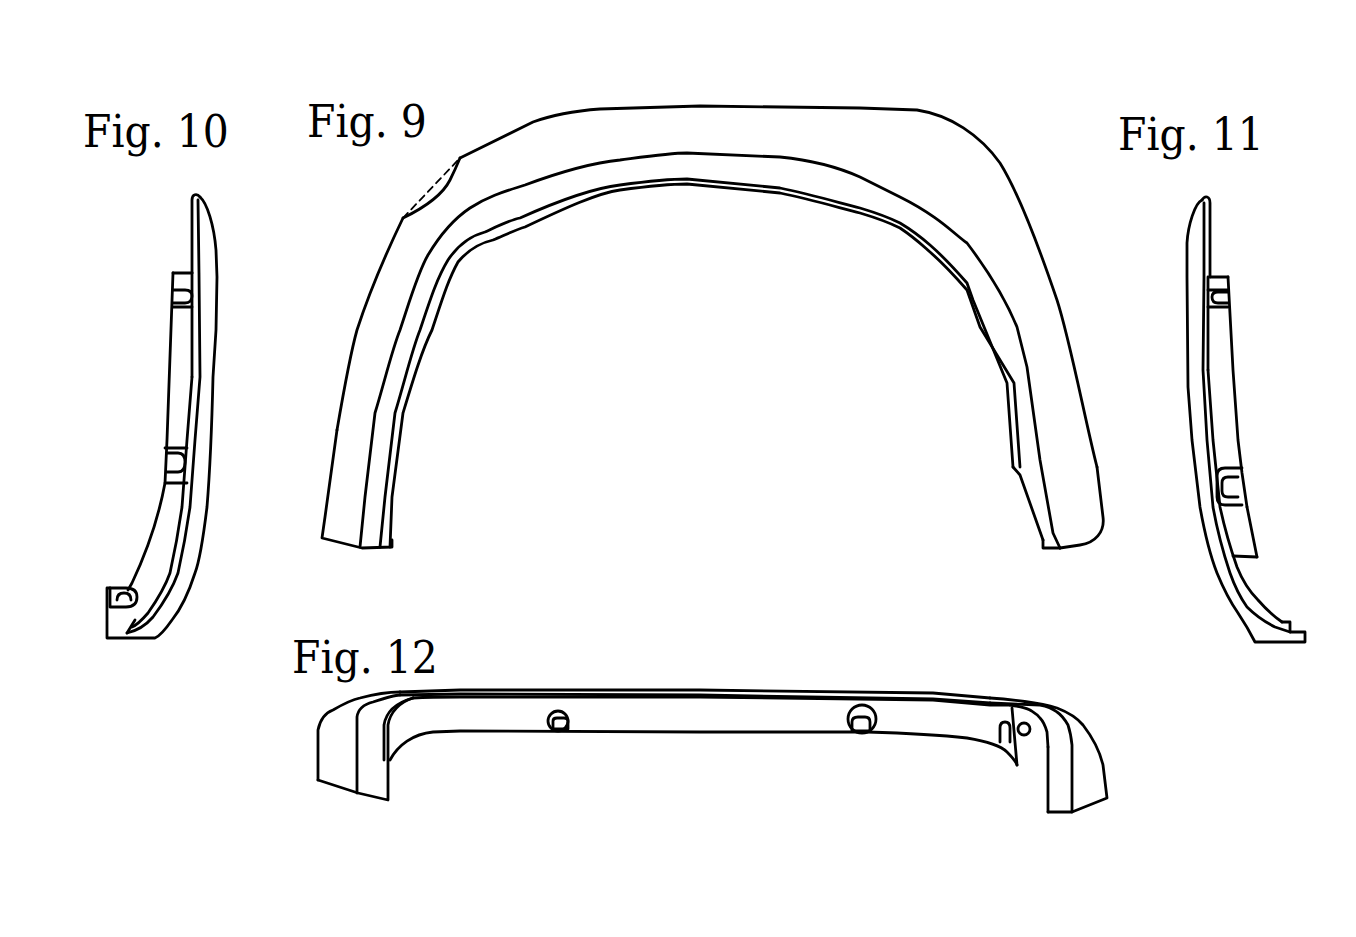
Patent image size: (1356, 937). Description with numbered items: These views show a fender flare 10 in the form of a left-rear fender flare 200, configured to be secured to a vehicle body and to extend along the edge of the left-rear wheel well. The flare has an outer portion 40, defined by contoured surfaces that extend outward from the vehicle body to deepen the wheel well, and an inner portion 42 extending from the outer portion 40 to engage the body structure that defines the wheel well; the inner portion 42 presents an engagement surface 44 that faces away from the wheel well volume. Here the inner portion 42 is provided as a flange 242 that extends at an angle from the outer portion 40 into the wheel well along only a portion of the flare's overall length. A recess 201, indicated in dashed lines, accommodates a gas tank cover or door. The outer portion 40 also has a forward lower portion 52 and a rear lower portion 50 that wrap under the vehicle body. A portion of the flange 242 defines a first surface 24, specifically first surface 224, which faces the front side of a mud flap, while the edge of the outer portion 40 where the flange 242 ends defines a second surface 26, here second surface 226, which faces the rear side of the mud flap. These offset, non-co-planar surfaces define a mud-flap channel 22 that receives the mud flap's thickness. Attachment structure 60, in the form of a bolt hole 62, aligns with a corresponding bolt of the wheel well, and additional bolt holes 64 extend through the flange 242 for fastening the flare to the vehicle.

In FIG. 9, the fender flare 10 is at (978, 66).
In FIG. 10, the fender flare 10 is at (234, 167).
In FIG. 11, the fender flare 10 is at (1236, 182).
In FIG. 12, the fender flare 10 is at (998, 649).
In FIG. 9, the left-rear fender flare 200 is at (980, 95).
In FIG. 10, the left-rear fender flare 200 is at (238, 199).
In FIG. 11, the left-rear fender flare 200 is at (1239, 214).
In FIG. 12, the left-rear fender flare 200 is at (1063, 679).
In FIG. 9, the outer portion 40 is at (1005, 158).
In FIG. 10, the outer portion 40 is at (223, 248).
In FIG. 11, the outer portion 40 is at (1183, 306).
In FIG. 12, the outer portion 40 is at (1123, 740).
In FIG. 9, the inner portion 42 is at (766, 198).
In FIG. 10, the inner portion 42 is at (167, 332).
In FIG. 11, the inner portion 42 is at (1237, 340).
In FIG. 12, the inner portion 42 is at (784, 776).
In FIG. 9, the engagement surface 44 is at (1007, 370).
In FIG. 10, the engagement surface 44 is at (183, 372).
In FIG. 11, the engagement surface 44 is at (1222, 395).
In FIG. 12, the engagement surface 44 is at (711, 718).
In FIG. 9, the flange 242 is at (692, 188).
In FIG. 10, the flange 242 is at (170, 405).
In FIG. 11, the flange 242 is at (1233, 372).
In FIG. 12, the flange 242 is at (683, 746).
In FIG. 9, the recess 201 is at (435, 197).
In FIG. 9, the forward lower portion 52 is at (346, 552).
In FIG. 12, the forward lower portion 52 is at (304, 764).
In FIG. 9, the rear lower portion 50 is at (1073, 556).
In FIG. 12, the rear lower portion 50 is at (1121, 794).
In FIG. 9, the second surface 26 is at (1031, 519).
In FIG. 12, the second surface 26 is at (1047, 737).
In FIG. 9, the second surface 226 is at (1030, 500).
In FIG. 12, the second surface 226 is at (1043, 800).
In FIG. 10, the bolt holes 64 is at (185, 292).
In FIG. 11, the bolt holes 64 is at (1238, 293).
In FIG. 12, the bolt holes 64 is at (568, 718).
In FIG. 11, the bolt hole 62 is at (1232, 470).
In FIG. 12, the bolt hole 62 is at (1000, 724).
In FIG. 11, the attachment structure 60 is at (1253, 482).
In FIG. 12, the attachment structure 60 is at (959, 756).
In FIG. 11, the first surface 24 is at (1241, 521).
In FIG. 12, the first surface 24 is at (1025, 750).
In FIG. 11, the first surface 224 is at (1243, 546).
In FIG. 12, the first surface 224 is at (1023, 722).
In FIG. 12, the mud-flap channel 22 is at (1029, 816).